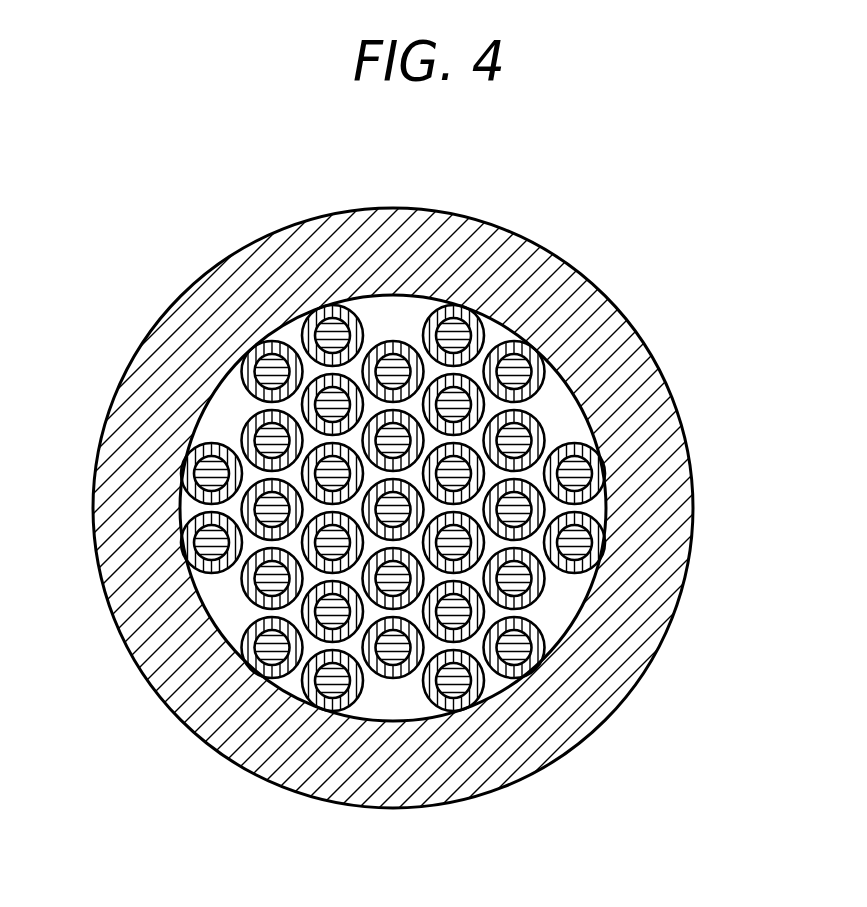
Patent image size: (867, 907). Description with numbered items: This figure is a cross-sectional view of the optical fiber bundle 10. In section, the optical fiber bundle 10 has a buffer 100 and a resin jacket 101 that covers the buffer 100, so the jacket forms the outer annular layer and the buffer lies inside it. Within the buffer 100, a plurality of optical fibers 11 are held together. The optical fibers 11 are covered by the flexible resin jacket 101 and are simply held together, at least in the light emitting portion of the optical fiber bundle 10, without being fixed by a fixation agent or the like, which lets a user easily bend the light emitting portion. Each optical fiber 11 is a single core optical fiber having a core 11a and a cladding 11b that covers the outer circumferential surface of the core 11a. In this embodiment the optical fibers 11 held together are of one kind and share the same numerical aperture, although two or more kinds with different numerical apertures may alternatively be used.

The optical fiber bundle 10 is at (200, 773).
The buffer 100 is at (203, 620).
The resin jacket 101 is at (267, 277).
The optical fiber 11 is at (487, 328).
The core 11a is at (577, 472).
The cladding 11b is at (598, 497).